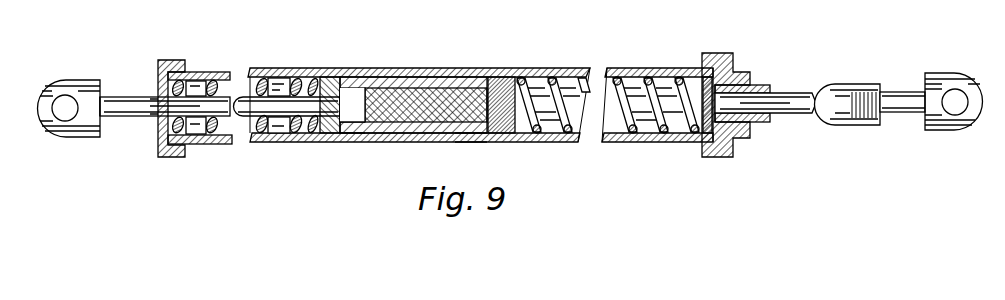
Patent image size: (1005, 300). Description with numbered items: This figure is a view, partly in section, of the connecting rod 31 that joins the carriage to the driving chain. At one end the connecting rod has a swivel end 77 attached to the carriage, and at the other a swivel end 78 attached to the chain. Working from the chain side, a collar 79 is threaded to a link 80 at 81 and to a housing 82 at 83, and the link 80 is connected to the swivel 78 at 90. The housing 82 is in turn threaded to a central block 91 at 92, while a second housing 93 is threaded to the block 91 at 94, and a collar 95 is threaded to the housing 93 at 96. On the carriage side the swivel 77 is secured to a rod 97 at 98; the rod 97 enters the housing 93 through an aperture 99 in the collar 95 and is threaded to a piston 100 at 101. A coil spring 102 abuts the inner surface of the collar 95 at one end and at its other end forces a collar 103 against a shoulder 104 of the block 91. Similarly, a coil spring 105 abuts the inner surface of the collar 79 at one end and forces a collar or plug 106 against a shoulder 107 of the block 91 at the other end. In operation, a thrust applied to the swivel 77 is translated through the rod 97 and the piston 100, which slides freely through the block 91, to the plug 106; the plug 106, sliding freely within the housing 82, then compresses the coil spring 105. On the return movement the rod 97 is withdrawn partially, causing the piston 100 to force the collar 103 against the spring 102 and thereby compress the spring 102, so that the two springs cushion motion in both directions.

The connecting rod 31 is at (721, 47).
The swivel end 77 is at (83, 130).
The swivel end 78 is at (940, 130).
The collar 79 is at (718, 157).
The link 80 is at (792, 122).
The threaded connection 81 is at (750, 86).
The housing 82 is at (630, 142).
The threaded connection 83 is at (704, 140).
The connection 90 is at (878, 125).
The block 91 is at (420, 133).
The threaded connection 92 is at (468, 142).
The housing 93 is at (283, 143).
The threaded connection 94 is at (345, 142).
The collar 95 is at (160, 155).
The threaded connection 96 is at (190, 146).
The rod 97 is at (122, 97).
The connection 98 is at (103, 97).
The aperture 99 is at (156, 118).
The piston 100 is at (400, 88).
The threaded connection 101 is at (356, 80).
The coil spring 102 is at (270, 70).
The collar 103 is at (326, 77).
The shoulder 104 is at (328, 133).
The coil spring 105 is at (643, 78).
The plug 106 is at (522, 80).
The shoulder 107 is at (494, 77).